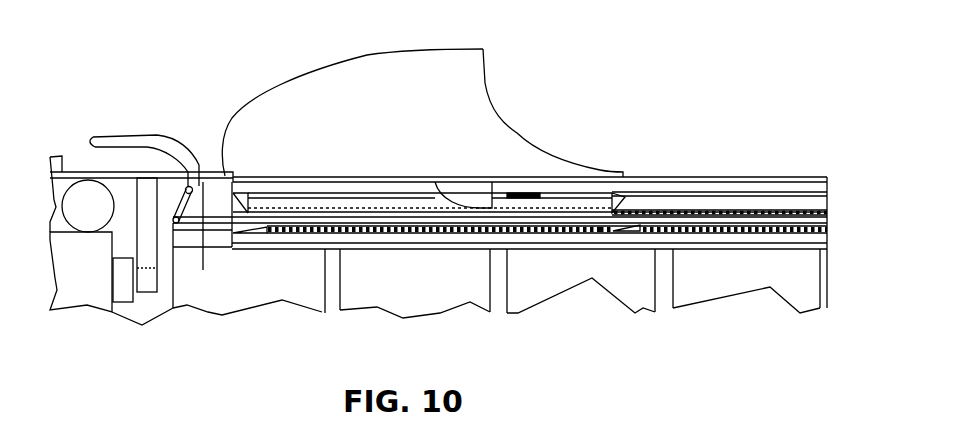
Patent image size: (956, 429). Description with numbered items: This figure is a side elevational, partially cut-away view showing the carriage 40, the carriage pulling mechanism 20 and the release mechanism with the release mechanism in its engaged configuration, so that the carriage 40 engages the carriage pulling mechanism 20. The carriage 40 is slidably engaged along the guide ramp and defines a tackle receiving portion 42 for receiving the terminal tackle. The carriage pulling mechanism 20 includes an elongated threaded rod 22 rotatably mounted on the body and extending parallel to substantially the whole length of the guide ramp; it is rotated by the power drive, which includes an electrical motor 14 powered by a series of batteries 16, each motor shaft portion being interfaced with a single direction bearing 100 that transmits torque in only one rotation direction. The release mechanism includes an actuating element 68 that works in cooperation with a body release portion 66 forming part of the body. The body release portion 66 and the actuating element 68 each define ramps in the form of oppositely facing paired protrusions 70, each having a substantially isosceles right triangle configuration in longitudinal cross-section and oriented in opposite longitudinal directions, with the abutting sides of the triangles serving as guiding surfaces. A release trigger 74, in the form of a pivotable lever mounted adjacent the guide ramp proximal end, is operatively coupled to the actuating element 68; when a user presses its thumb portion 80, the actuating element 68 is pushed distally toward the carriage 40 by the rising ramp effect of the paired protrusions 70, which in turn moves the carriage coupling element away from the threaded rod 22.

The electrical motor 14 is at (73, 282).
The batteries 16 is at (688, 292).
The carriage pulling mechanism 20 is at (787, 205).
The threaded rod 22 is at (735, 212).
The carriage 40 is at (343, 63).
The tackle receiving portion 42 is at (457, 78).
The body release portion 66 is at (422, 248).
The actuating element 68 is at (202, 230).
The paired protrusions 70 is at (615, 223).
The release trigger 74 is at (123, 128).
The thumb portion 80 is at (168, 143).
The single direction bearing 100 is at (123, 303).